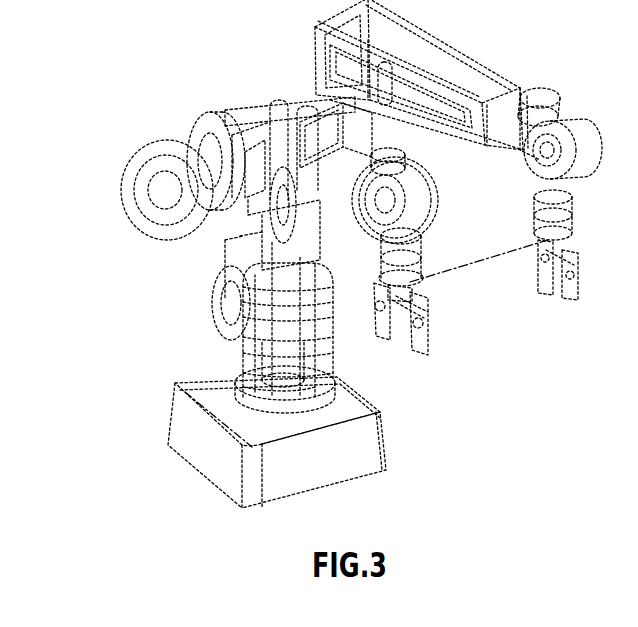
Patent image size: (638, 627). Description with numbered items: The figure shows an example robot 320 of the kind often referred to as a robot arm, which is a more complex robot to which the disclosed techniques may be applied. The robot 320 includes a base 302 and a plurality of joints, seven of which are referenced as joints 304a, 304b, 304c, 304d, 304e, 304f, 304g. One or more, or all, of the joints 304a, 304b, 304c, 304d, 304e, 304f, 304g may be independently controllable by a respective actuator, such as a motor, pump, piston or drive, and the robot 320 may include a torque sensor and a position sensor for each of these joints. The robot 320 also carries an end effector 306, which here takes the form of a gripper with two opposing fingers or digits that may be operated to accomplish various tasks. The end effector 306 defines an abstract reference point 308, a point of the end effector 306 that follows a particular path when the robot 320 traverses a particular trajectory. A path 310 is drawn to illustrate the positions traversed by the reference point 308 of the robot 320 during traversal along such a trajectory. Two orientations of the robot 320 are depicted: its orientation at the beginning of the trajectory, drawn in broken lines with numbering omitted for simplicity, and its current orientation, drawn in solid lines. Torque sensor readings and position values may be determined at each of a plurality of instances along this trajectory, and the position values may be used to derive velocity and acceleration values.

The robot 320 is at (220, 34).
The base 302 is at (236, 449).
The joint 304a is at (407, 246).
The joint 304b is at (387, 200).
The joint 304c is at (386, 156).
The joint 304d is at (283, 209).
The joint 304e is at (198, 160).
The joint 304f is at (236, 305).
The joint 304g is at (252, 397).
The end effector 306 is at (405, 282).
The reference point 308 is at (387, 291).
The path 310 is at (468, 267).